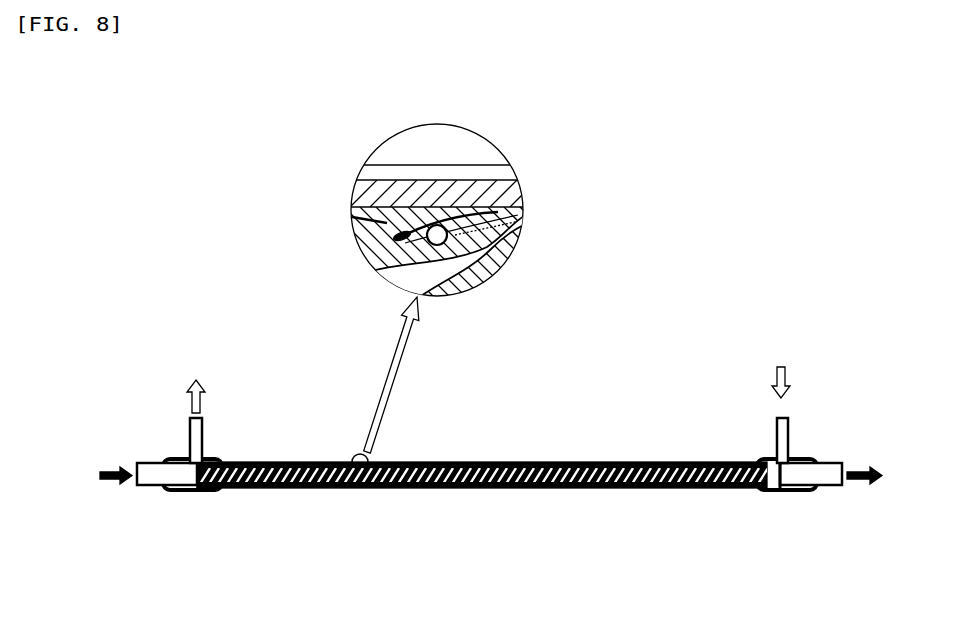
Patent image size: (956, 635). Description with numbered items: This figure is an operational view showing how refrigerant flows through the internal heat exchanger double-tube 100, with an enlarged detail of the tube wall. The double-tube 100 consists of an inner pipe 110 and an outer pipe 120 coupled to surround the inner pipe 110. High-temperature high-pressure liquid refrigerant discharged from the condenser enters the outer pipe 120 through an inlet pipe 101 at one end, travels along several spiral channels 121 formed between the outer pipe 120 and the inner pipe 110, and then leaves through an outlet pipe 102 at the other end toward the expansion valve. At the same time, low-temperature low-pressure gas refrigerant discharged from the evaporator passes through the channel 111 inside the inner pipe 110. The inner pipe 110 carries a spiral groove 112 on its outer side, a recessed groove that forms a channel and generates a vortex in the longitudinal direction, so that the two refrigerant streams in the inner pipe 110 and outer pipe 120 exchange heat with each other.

The internal heat exchanger double-tube 100 is at (491, 338).
The inlet pipe 101 is at (776, 428).
The outlet pipe 102 is at (203, 432).
The inner pipe 110 is at (492, 205).
The channel 111 is at (500, 266).
The spiral groove 112 is at (380, 241).
The outer pipe 120 is at (367, 178).
The channel 121 is at (399, 216).